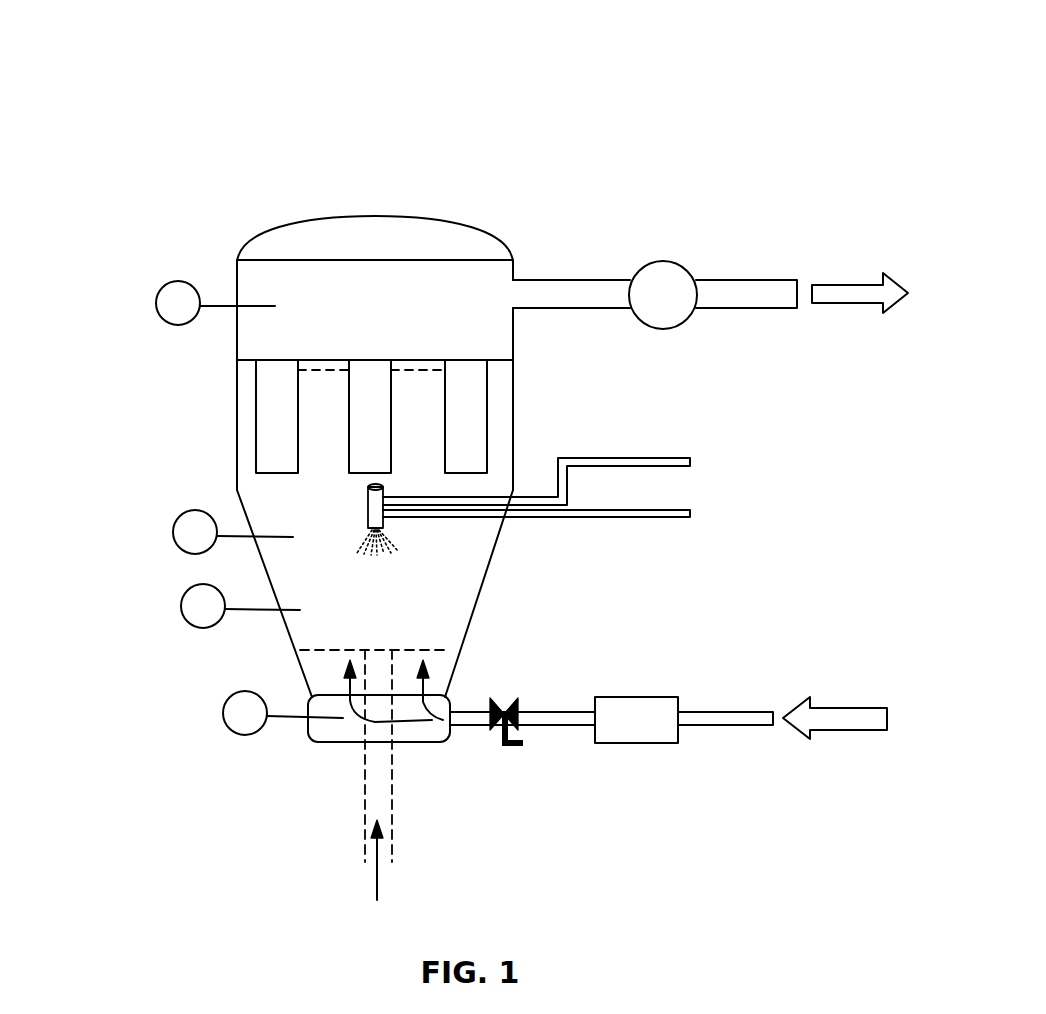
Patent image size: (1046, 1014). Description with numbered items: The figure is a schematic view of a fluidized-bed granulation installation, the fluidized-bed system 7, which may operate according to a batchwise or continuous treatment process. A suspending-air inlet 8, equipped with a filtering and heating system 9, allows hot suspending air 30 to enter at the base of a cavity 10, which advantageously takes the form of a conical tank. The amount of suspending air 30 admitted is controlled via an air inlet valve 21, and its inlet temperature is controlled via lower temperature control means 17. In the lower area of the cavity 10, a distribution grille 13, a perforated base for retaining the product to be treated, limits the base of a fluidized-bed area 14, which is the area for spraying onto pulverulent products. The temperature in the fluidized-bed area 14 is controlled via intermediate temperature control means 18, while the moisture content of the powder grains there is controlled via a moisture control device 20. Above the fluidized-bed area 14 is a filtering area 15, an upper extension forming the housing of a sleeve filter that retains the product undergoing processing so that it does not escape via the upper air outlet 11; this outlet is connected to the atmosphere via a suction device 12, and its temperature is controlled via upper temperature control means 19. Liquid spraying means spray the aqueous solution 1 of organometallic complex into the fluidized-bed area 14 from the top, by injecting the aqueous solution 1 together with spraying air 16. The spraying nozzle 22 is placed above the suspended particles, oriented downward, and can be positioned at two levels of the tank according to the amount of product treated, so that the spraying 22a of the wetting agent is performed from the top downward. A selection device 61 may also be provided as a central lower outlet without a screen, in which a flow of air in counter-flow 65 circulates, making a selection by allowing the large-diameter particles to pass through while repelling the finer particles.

The fluidized-bed system 7 is at (388, 162).
The cavity 10 is at (226, 445).
The fluidized-bed area 14 is at (448, 608).
The filtering area 15 is at (273, 392).
The upper air outlet 11 is at (543, 293).
The suction device 12 is at (658, 278).
The upper temperature control means 19 is at (175, 302).
The moisture control device 20 is at (195, 532).
The intermediate temperature control means 18 is at (207, 608).
The lower temperature control means 17 is at (243, 712).
The distribution grille 13 is at (335, 650).
The selection device 61 is at (365, 788).
The flow of air in counter-flow 65 is at (377, 873).
The hot suspending air 30 is at (425, 678).
The suspending-air inlet 8 is at (471, 727).
The air inlet valve 21 is at (505, 745).
The filtering and heating system 9 is at (643, 713).
The spraying nozzle 22 is at (377, 520).
The spraying 22a is at (380, 552).
The spraying air 16 is at (657, 463).
The aqueous solution 1 is at (677, 514).